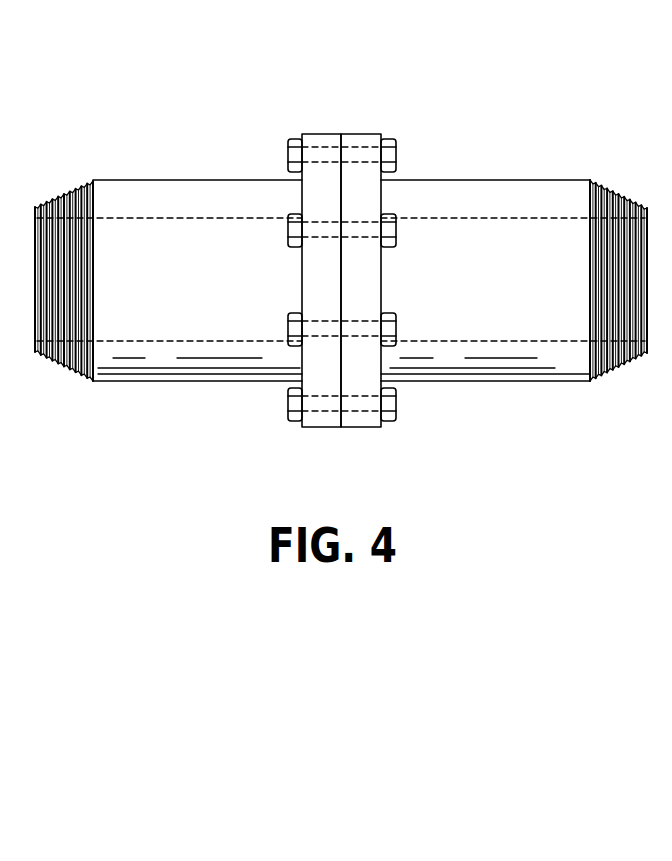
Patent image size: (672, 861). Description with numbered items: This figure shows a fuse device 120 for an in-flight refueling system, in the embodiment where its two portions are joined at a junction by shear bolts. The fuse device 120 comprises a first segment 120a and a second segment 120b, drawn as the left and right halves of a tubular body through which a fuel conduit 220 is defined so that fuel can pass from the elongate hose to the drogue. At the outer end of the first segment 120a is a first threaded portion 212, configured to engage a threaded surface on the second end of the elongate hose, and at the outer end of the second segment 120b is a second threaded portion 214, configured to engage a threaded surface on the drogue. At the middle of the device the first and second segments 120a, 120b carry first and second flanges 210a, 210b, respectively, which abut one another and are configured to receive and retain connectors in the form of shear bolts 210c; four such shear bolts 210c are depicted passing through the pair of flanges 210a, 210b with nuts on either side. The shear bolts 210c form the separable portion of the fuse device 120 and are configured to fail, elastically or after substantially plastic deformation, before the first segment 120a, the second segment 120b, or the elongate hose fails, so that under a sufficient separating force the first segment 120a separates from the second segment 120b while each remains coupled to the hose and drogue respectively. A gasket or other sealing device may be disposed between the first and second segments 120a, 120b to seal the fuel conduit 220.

The fuse device 120 is at (280, 95).
The first segment 120a is at (320, 433).
The second segment 120b is at (648, 433).
The first flange 210a is at (325, 122).
The second flange 210b is at (367, 125).
The shear bolt 210c is at (400, 402).
The first threaded portion 212 is at (58, 196).
The second threaded portion 214 is at (619, 198).
The fuel conduit 220 is at (518, 273).